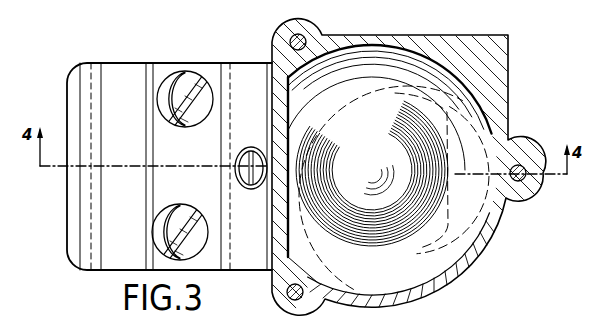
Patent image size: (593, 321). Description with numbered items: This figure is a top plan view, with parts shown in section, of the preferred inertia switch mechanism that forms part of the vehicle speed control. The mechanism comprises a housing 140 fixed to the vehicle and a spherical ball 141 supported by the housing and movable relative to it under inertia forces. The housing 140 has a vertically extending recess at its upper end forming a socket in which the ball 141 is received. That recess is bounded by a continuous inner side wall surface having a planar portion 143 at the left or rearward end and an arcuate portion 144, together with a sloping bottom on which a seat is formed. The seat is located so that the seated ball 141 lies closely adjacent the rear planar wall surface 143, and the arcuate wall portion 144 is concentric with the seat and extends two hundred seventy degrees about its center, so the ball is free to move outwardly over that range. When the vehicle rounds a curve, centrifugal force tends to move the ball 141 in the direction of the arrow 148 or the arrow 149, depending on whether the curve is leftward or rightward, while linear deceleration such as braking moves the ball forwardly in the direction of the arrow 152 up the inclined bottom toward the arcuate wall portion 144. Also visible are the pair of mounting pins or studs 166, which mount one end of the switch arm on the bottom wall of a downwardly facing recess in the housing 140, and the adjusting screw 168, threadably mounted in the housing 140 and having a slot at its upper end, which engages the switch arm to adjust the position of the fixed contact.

The housing 140 is at (110, 66).
The spherical ball 141 is at (445, 185).
The planar portion of inner side wall surface 143 is at (289, 96).
The arcuate portion of inner side wall surface 144 is at (414, 49).
The arrow 148 is at (374, 78).
The arrow 149 is at (369, 293).
The arrow 152 is at (494, 174).
The mounting pins or studs 166 is at (170, 98).
The adjusting screw 168 is at (262, 140).